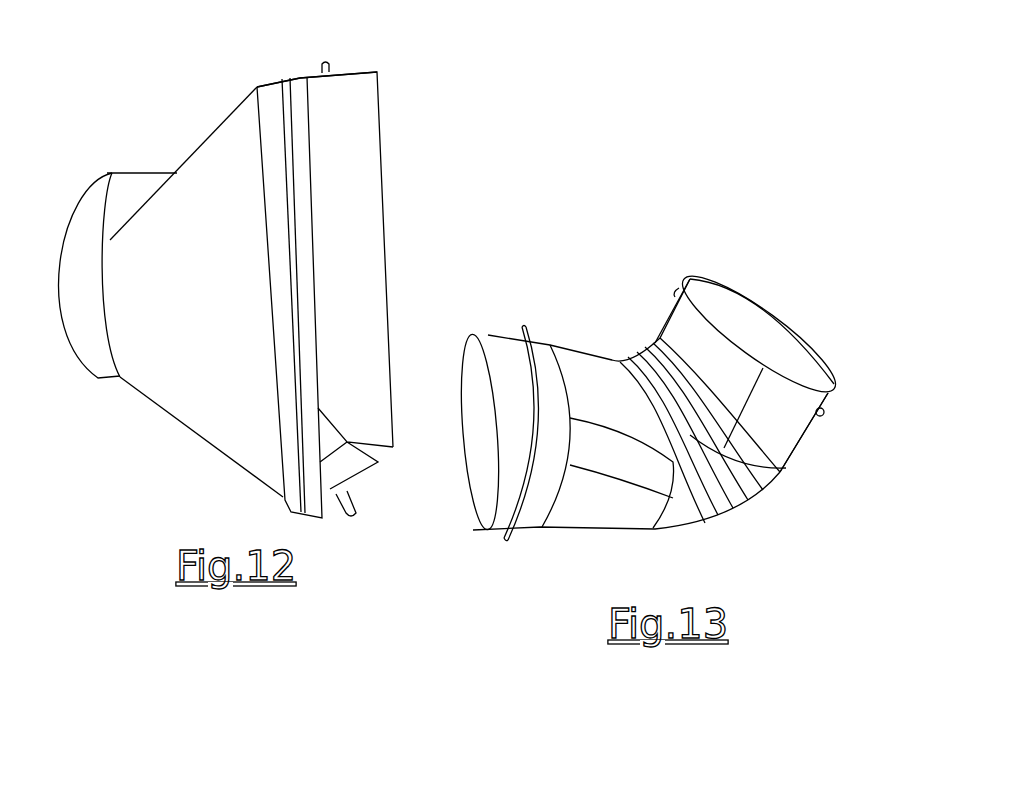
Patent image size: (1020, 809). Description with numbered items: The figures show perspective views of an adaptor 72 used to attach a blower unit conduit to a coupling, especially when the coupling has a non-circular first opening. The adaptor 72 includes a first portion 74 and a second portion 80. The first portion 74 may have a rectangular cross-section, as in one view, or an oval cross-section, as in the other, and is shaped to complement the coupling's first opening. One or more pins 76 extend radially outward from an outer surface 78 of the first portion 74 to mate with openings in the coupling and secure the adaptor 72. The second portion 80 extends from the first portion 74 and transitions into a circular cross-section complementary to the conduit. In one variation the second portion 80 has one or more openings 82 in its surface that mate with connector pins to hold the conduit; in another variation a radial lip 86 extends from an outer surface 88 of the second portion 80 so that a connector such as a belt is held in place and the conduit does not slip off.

In FIG. 12, the adaptor 72 is at (203, 126).
In FIG. 13, the adaptor 72 is at (751, 275).
In FIG. 12, the first portion 74 is at (258, 78).
In FIG. 13, the first portion 74 is at (826, 347).
In FIG. 12, the pins 76 is at (325, 62).
In FIG. 13, the pins 76 is at (674, 290).
In FIG. 12, the outer surface 78 is at (359, 66).
In FIG. 13, the outer surface 78 is at (812, 428).
In FIG. 12, the second portion 80 is at (143, 164).
In FIG. 13, the second portion 80 is at (561, 325).
In FIG. 12, the openings 82 is at (110, 193).
In FIG. 13, the radial lip 86 is at (523, 328).
In FIG. 13, the outer surface 88 is at (574, 338).